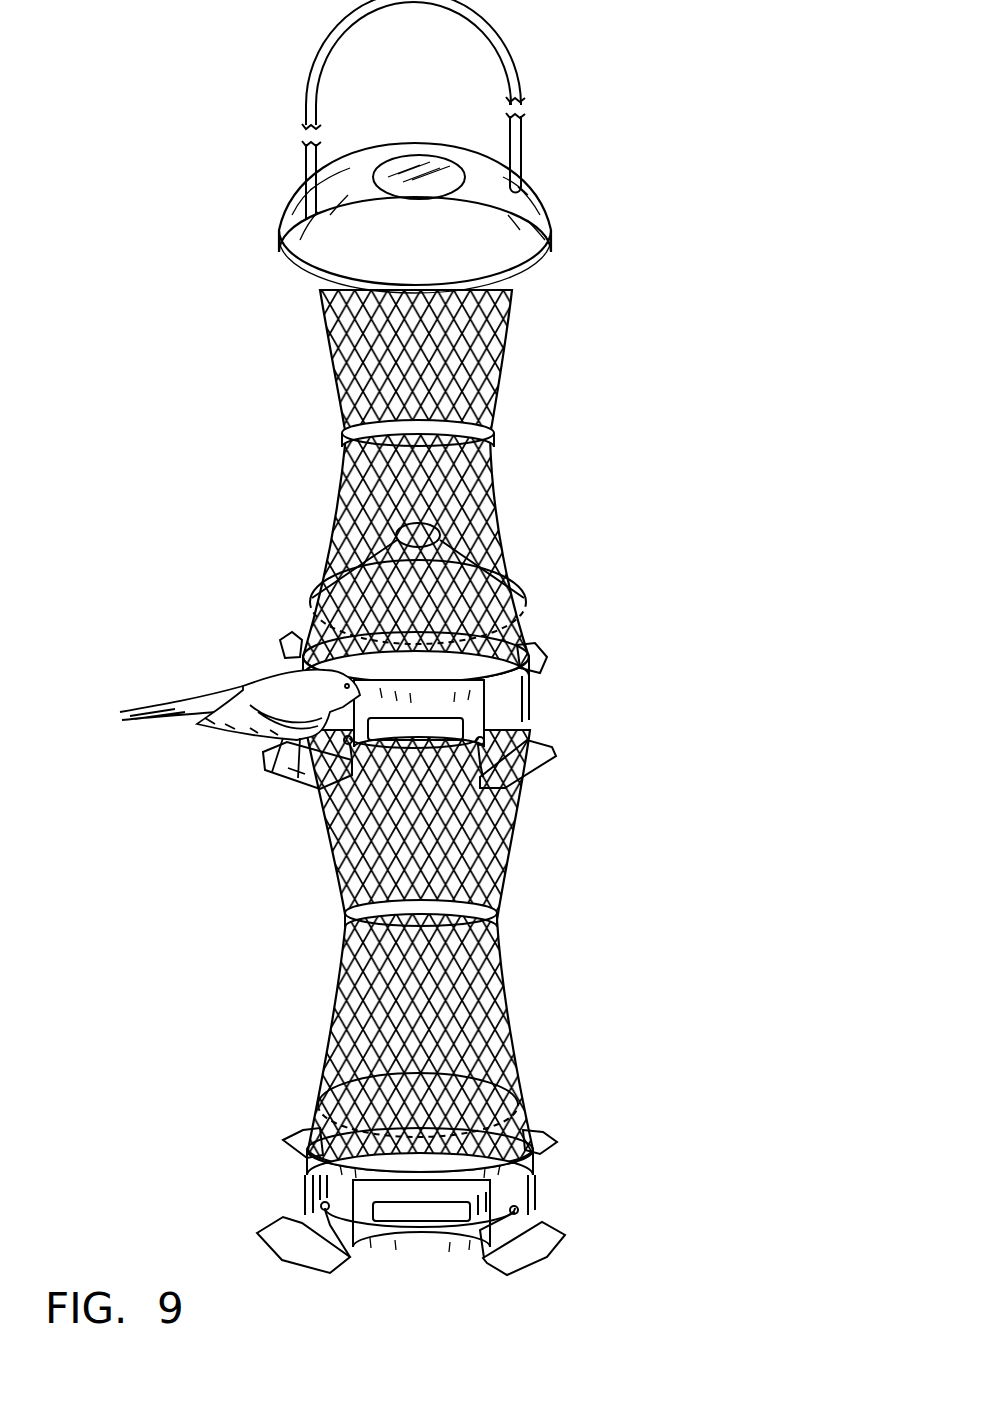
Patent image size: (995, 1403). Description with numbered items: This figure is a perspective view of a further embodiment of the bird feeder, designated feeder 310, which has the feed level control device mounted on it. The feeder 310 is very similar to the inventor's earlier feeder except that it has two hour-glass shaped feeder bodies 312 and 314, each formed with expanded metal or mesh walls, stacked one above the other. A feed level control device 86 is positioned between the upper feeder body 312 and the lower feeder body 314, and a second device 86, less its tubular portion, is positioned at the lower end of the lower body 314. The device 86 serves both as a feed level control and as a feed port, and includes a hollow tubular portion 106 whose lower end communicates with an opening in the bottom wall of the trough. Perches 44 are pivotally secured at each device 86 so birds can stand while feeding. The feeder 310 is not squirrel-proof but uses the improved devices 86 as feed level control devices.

The feeder 310 is at (431, 637).
The feeder body 312 is at (509, 486).
The hollow tubular portion 106 is at (427, 599).
The feed level control device 86 is at (478, 708).
The perches 44 is at (525, 782).
The feeder body 314 is at (515, 1031).